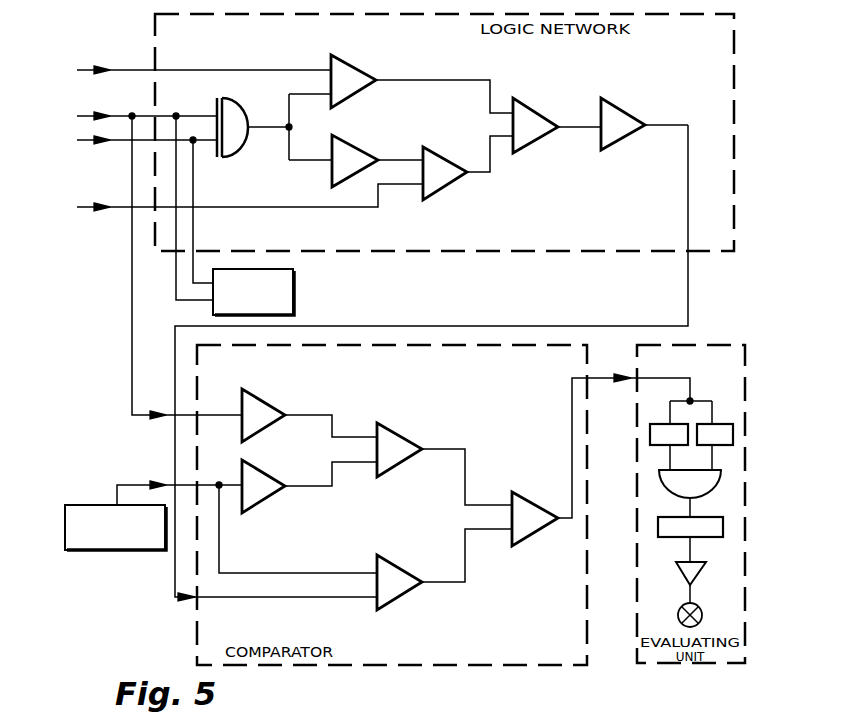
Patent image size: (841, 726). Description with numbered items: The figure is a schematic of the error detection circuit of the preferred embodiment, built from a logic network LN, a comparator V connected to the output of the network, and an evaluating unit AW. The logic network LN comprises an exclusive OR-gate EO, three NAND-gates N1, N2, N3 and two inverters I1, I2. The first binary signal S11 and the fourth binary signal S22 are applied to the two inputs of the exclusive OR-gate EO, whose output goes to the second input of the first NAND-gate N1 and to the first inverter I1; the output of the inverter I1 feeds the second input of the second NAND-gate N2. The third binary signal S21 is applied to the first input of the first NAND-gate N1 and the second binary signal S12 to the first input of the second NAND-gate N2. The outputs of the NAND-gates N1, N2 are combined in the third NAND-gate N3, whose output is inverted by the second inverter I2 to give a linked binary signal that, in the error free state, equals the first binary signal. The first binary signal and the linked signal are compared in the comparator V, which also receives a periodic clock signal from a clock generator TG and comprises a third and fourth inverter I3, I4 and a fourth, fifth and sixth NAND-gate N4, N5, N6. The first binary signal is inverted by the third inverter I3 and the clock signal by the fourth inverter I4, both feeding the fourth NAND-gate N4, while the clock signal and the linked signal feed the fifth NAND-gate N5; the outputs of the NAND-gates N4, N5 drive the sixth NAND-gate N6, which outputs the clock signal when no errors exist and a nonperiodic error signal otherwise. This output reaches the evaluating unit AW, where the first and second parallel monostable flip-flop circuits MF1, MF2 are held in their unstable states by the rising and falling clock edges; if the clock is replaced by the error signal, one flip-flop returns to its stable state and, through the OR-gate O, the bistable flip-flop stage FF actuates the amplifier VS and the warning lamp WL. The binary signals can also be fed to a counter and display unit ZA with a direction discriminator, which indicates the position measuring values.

The third binary signal S21 is at (185, 71).
The first binary signal S11 is at (113, 430).
The fourth binary signal S22 is at (128, 206).
The second binary signal S12 is at (234, 202).
The exclusive OR-gate EO is at (233, 158).
The first NAND-gate N1 is at (351, 75).
The first inverter I1 is at (338, 168).
The second NAND-gate N2 is at (448, 180).
The third NAND-gate N3 is at (537, 133).
The second inverter I2 is at (620, 130).
The logic network LN is at (706, 252).
The counter and display unit ZA is at (295, 296).
The third inverter I3 is at (258, 410).
The fourth inverter I4 is at (266, 500).
The fourth NAND-gate N4 is at (387, 443).
The fifth NAND-gate N5 is at (395, 588).
The sixth NAND-gate N6 is at (532, 528).
The comparator V is at (545, 665).
The periodic clock signal TT is at (140, 483).
The clock generator TG is at (118, 552).
The first monostable flip-flop circuit MF1 is at (655, 436).
The second monostable flip-flop circuit MF2 is at (730, 435).
The OR-gate O is at (703, 483).
The bistable flip-flop stage FF is at (712, 528).
The amplifier VS is at (688, 578).
The warning lamp WL is at (702, 612).
The evaluating unit AW is at (677, 667).